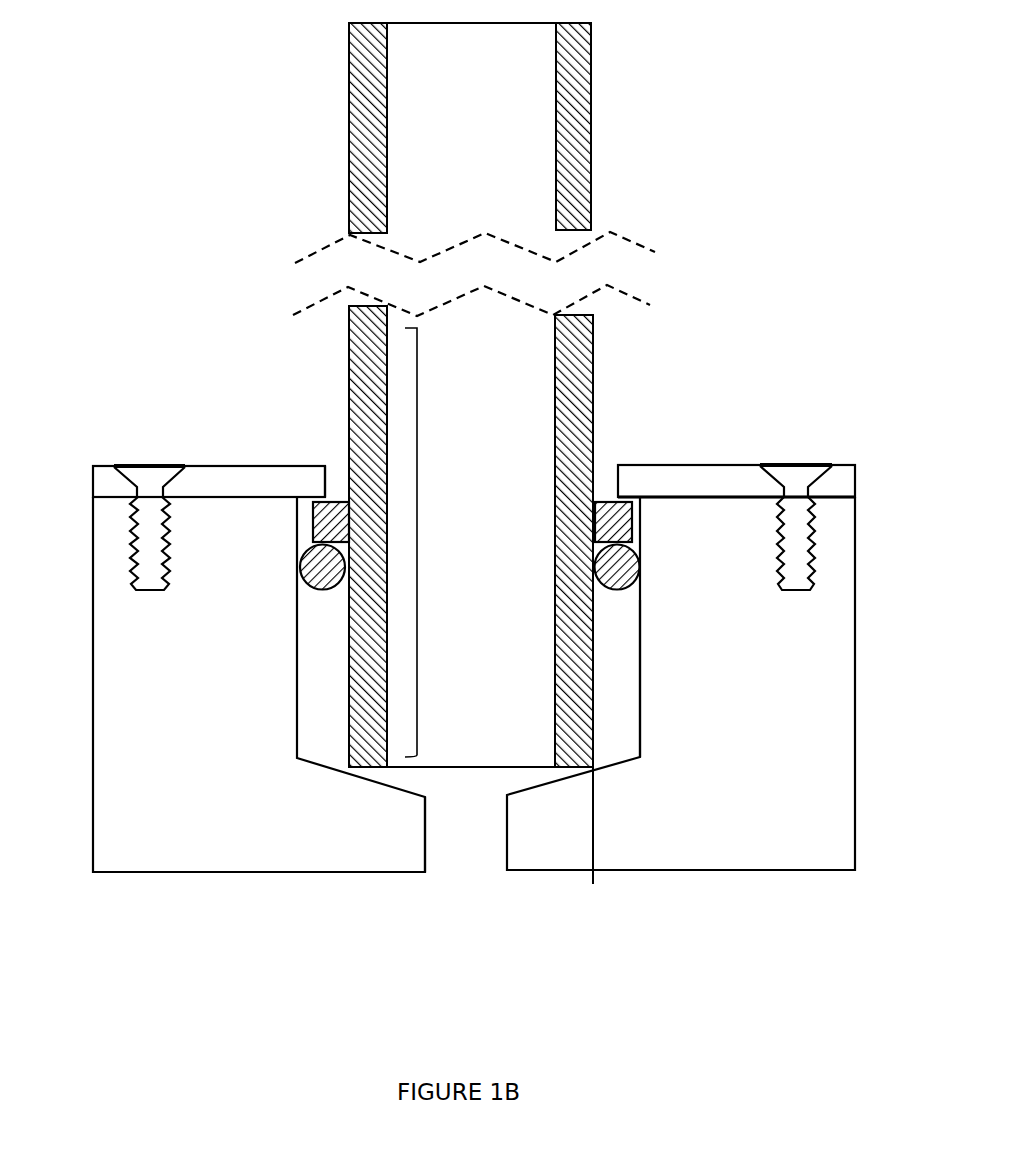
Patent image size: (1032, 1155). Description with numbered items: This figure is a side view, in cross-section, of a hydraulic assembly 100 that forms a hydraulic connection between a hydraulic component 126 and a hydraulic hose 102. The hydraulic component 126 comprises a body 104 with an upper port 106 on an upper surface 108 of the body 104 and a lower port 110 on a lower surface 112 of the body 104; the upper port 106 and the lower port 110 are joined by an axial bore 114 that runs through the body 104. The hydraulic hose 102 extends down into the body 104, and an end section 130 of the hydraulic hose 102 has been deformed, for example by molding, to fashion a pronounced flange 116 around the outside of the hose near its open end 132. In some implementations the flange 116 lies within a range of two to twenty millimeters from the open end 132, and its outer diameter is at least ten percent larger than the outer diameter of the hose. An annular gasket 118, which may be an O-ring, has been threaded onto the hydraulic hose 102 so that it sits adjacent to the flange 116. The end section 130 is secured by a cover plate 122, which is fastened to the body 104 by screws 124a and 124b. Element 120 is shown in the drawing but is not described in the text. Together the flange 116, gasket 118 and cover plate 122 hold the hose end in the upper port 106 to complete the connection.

The hydraulic assembly 100 is at (170, 171).
The hydraulic hose 102 is at (349, 112).
The body 104 is at (97, 632).
The upper port 106 is at (337, 466).
The upper surface 108 is at (864, 496).
The lower port 110 is at (466, 856).
The lower surface 112 is at (864, 869).
The axial bore 114 is at (630, 690).
The flange 116 is at (611, 502).
The annular gasket 118 is at (617, 575).
The second flange 120 is at (683, 498).
The cover plate 122 is at (100, 478).
The screw 124a is at (147, 465).
The screw 124b is at (795, 470).
The hydraulic component 126 is at (78, 419).
The end section 130 is at (417, 543).
The open end 132 is at (468, 778).